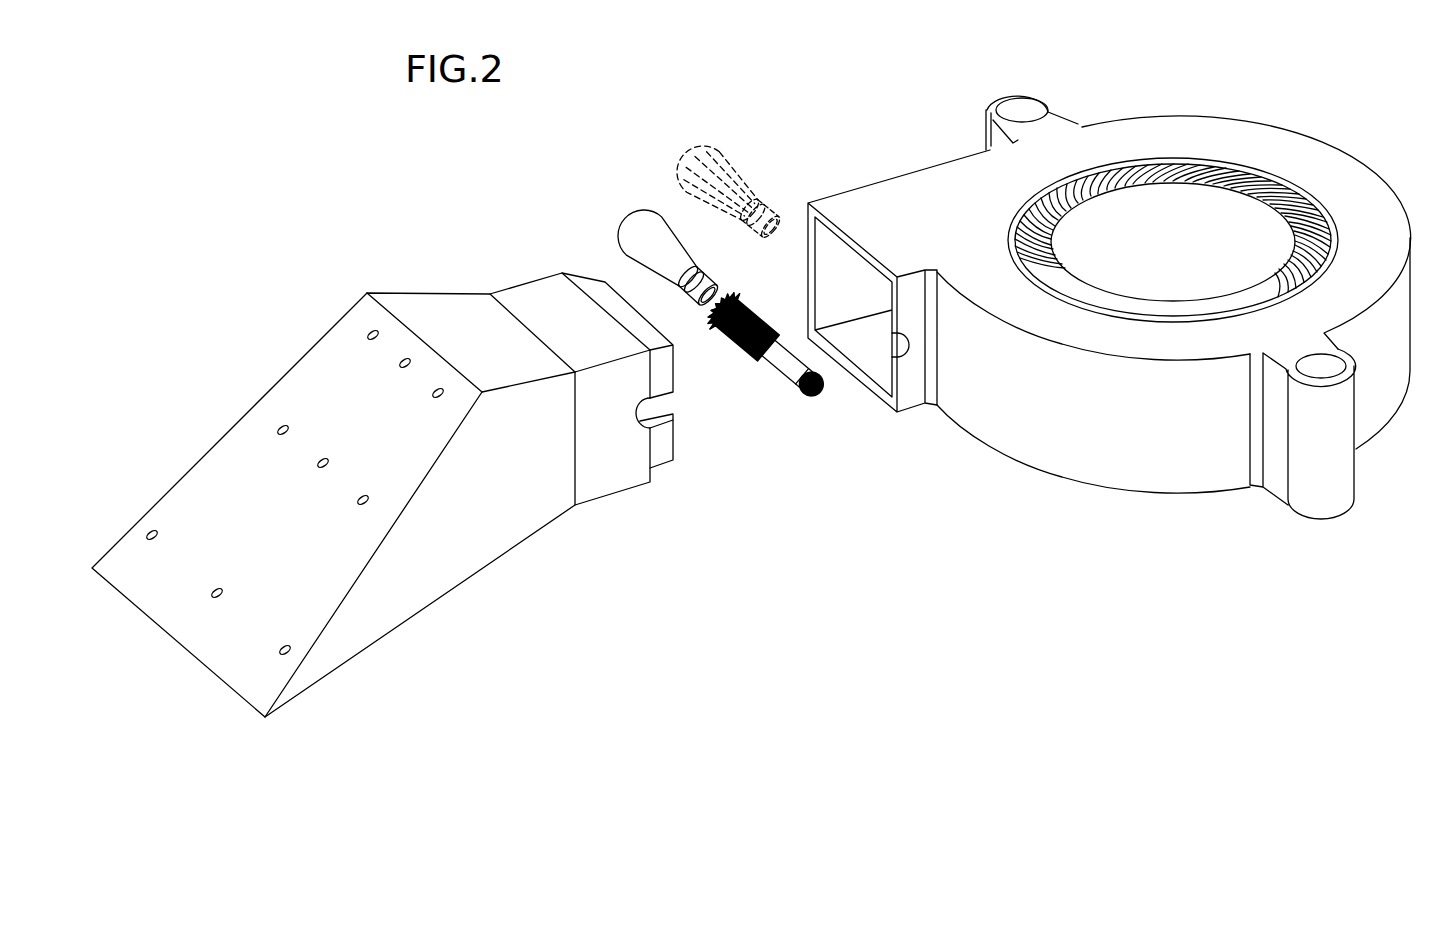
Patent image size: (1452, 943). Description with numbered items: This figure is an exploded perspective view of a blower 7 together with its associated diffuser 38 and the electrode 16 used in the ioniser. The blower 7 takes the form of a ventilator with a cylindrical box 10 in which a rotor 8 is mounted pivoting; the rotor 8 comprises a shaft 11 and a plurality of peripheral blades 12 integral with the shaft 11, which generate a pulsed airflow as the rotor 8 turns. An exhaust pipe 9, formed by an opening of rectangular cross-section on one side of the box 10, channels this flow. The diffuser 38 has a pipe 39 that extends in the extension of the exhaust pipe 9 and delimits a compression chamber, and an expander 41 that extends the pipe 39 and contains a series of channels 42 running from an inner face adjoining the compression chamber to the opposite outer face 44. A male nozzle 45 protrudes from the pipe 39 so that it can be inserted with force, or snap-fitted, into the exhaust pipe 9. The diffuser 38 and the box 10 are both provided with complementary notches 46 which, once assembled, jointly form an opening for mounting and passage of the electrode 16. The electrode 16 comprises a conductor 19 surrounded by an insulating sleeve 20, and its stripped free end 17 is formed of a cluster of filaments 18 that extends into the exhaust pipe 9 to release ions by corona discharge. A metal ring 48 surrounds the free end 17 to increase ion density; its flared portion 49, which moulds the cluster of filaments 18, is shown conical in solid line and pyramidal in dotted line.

The blower 7 is at (1166, 497).
The rotor 8 is at (1127, 302).
The exhaust pipe 9 is at (830, 255).
The box 10 is at (1372, 188).
The shaft 11 is at (1183, 247).
The peripheral blades 12 is at (1032, 212).
The electrode 16 is at (779, 379).
The free end 17 is at (739, 346).
The cluster of filaments 18 is at (757, 312).
The conductor 19 is at (813, 386).
The sleeve 20 is at (798, 388).
The diffuser 38 is at (366, 291).
The pipe 39 is at (548, 290).
The expander 41 is at (492, 540).
The channels 42 is at (438, 389).
The outer face 44 is at (230, 458).
The male nozzle 45 is at (595, 292).
The notch 46 is at (668, 416).
The metal ring 48 is at (632, 209).
The flared portion 49 is at (673, 246).